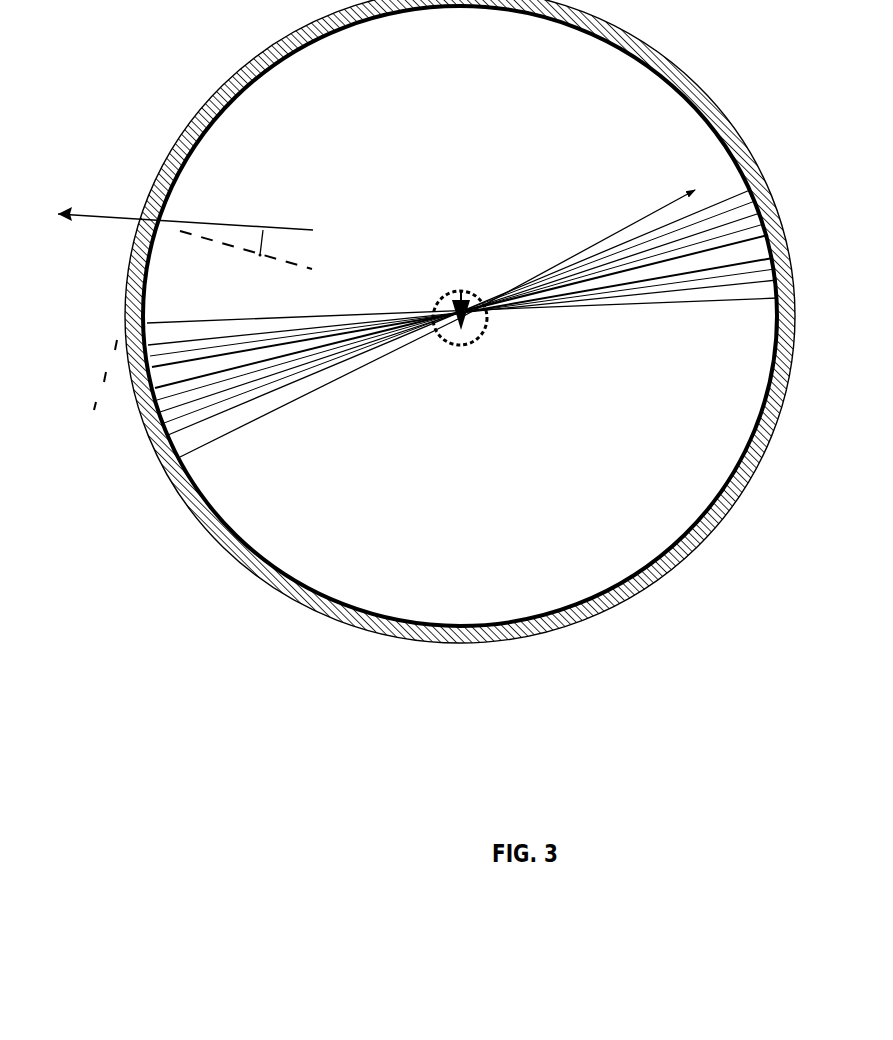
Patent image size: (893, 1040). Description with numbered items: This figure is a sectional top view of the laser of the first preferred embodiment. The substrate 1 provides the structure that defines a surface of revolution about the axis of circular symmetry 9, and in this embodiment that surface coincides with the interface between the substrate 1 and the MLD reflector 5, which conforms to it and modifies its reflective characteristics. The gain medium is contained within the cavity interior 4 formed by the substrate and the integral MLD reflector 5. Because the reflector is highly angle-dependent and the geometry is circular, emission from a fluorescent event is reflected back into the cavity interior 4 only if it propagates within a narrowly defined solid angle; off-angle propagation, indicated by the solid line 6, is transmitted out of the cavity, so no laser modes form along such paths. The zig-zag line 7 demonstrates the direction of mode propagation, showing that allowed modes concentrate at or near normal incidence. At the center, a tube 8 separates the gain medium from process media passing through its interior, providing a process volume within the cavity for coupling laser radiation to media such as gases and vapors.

The substrate 1 is at (241, 71).
The cavity interior 4 is at (455, 129).
The MLD reflector 5 is at (729, 123).
The solid line 6 is at (228, 220).
The zig-zag line 7 is at (313, 405).
The tube 8 is at (487, 335).
The axis of circular symmetry 9 is at (455, 291).